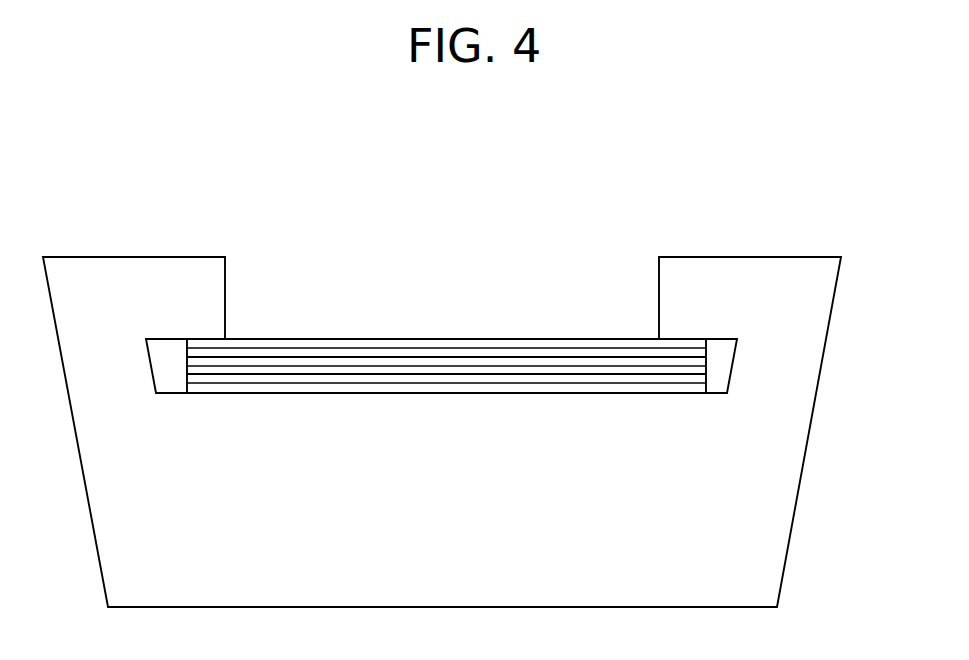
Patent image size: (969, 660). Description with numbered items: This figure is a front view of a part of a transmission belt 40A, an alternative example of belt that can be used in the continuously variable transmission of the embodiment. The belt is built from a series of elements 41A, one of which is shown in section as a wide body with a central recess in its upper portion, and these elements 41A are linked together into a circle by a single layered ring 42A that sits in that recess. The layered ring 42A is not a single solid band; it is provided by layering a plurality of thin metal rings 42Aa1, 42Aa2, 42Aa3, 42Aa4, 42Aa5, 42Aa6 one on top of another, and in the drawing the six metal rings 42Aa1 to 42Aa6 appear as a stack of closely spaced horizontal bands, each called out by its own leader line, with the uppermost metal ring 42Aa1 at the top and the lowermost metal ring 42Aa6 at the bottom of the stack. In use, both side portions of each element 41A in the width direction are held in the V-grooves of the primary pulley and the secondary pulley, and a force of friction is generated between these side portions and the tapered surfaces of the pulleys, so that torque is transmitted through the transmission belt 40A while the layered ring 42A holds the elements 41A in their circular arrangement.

The transmission belt 40A is at (595, 183).
The element 41A is at (826, 352).
The layered ring 42A is at (443, 338).
The metal ring 42Aa1 is at (707, 343).
The metal ring 42Aa2 is at (707, 352).
The metal ring 42Aa3 is at (707, 361).
The metal ring 42Aa4 is at (707, 370).
The metal ring 42Aa5 is at (692, 380).
The metal ring 42Aa6 is at (673, 389).